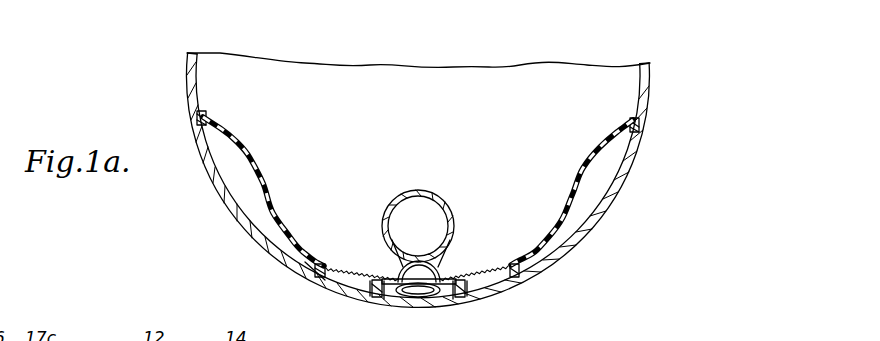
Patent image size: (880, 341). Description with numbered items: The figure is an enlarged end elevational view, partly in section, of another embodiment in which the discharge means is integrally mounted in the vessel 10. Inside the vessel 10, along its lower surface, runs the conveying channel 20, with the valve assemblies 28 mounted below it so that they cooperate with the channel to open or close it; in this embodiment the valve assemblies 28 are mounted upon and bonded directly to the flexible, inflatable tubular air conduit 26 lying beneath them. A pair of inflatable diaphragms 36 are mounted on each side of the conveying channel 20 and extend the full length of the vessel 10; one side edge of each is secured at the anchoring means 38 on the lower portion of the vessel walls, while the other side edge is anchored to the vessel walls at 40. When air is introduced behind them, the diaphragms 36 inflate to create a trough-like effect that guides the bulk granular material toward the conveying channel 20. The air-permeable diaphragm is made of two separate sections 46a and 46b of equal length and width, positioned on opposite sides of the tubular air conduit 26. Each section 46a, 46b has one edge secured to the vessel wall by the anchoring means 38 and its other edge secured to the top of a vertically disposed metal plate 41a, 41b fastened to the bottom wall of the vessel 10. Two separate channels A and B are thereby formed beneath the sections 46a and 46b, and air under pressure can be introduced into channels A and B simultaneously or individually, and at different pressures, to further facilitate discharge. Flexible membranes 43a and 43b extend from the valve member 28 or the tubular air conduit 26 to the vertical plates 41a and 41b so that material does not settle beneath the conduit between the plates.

The vessel 10 is at (648, 80).
The anchoring point 40 is at (206, 116).
The inflatable diaphragm 36 is at (265, 186).
The conveying channel 20 is at (430, 193).
The valve assembly 28 is at (397, 273).
The tubular air conduit 26 is at (421, 300).
The flexible membrane 43a is at (380, 299).
The flexible membrane 43b is at (458, 280).
The vertical plate 41a is at (373, 292).
The vertical plate 41b is at (461, 290).
The air-permeable diaphragm section 46a is at (337, 266).
The air-permeable diaphragm section 46b is at (512, 278).
The anchoring means 38 is at (316, 270).
The channel A is at (343, 278).
The channel B is at (488, 288).